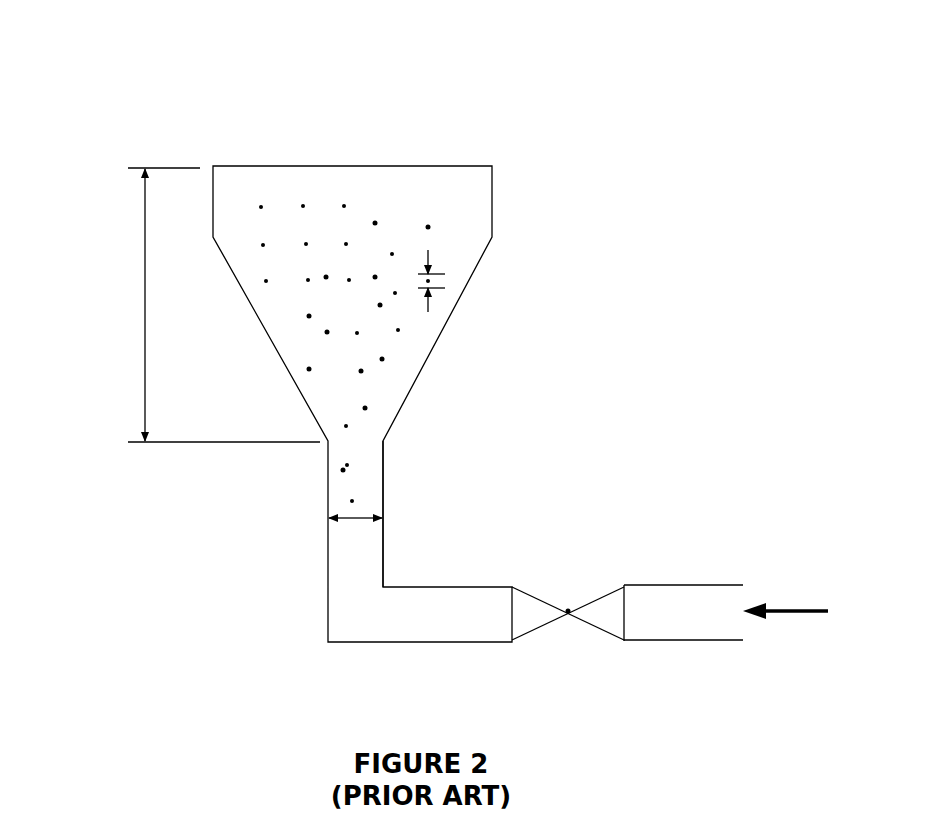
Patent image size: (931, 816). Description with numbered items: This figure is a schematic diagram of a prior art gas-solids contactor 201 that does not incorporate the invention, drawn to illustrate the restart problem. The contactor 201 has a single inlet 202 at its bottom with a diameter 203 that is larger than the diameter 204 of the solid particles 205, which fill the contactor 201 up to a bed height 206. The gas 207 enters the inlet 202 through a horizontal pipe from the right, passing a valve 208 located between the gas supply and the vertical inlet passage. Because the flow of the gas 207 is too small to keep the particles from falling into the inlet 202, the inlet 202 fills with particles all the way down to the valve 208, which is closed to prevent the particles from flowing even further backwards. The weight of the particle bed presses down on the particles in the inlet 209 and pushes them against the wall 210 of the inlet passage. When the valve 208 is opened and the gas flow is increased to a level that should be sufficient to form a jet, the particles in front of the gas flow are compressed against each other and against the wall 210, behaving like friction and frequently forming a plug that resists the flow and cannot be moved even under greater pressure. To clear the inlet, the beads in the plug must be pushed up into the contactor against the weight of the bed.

The gas-solids contactor 201 is at (352, 165).
The inlet 202 is at (386, 441).
The inlet diameter 203 is at (362, 518).
The particle diameter 204 is at (443, 272).
The solid particles 205 is at (432, 205).
The bed height 206 is at (145, 310).
The gas flow 207 is at (795, 608).
The valve 208 is at (569, 609).
The particles in the inlet 209 is at (344, 470).
The wall 210 is at (385, 550).